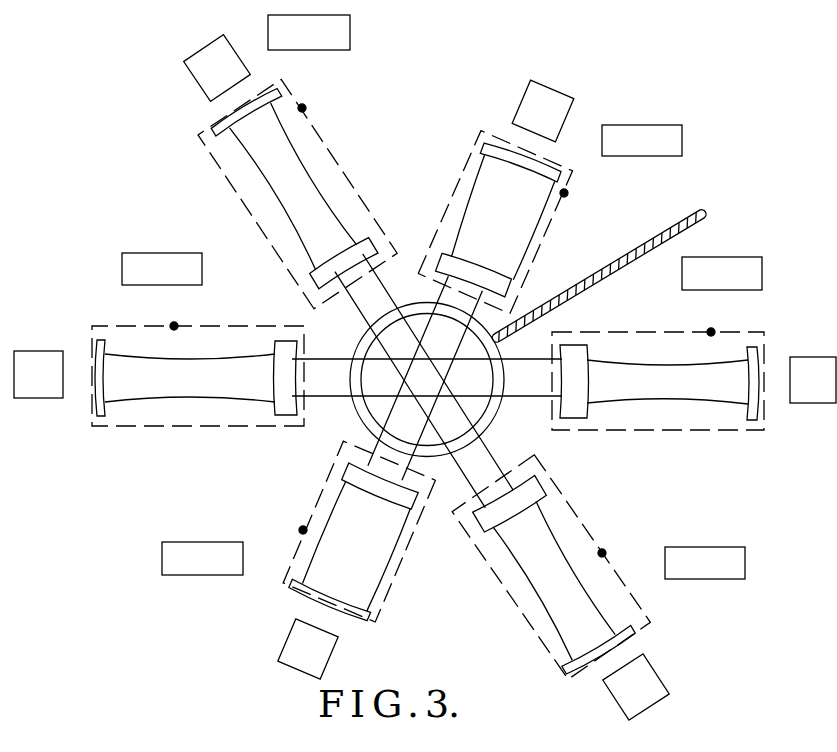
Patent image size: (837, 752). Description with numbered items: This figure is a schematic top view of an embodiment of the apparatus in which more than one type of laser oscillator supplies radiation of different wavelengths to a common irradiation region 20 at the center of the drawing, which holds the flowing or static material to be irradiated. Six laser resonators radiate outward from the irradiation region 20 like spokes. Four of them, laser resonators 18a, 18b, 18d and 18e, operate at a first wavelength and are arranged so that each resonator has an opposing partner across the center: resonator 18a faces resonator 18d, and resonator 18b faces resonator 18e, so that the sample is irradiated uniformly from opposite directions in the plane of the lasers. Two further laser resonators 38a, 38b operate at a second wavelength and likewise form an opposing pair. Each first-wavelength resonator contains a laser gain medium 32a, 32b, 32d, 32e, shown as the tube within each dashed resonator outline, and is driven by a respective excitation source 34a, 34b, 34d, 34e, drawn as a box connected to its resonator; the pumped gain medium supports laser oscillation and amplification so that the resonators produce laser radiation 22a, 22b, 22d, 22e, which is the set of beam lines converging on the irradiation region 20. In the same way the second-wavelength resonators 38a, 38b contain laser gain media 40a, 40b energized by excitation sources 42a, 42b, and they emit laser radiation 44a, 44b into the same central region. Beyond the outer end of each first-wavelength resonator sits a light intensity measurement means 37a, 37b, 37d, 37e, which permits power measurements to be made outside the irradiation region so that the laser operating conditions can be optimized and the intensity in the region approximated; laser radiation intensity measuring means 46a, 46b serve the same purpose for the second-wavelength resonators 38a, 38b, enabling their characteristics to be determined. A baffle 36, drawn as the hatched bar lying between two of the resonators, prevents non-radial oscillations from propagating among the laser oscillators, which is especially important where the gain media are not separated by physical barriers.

The laser resonator 18a is at (520, 618).
The laser resonator 18b is at (700, 432).
The laser resonator 18d is at (344, 171).
The laser resonator 18e is at (180, 426).
The irradiation region 20 is at (388, 405).
The laser radiation 22a is at (482, 457).
The laser radiation 22b is at (530, 348).
The laser radiation 22d is at (363, 312).
The laser radiation 22e is at (330, 390).
The laser gain medium 32a is at (508, 558).
The laser gain medium 32b is at (637, 411).
The laser gain medium 32d is at (310, 153).
The laser gain medium 32e is at (140, 403).
The excitation source 34a is at (602, 553).
The excitation source 34b is at (711, 332).
The excitation source 34d is at (302, 108).
The excitation source 34e is at (174, 326).
The baffle 36 is at (688, 212).
The light intensity measurement means 37a is at (636, 687).
The light intensity measurement means 37b is at (797, 392).
The light intensity measurement means 37d is at (217, 68).
The light intensity measurement means 37e is at (22, 387).
The laser resonator 38a is at (391, 594).
The laser resonator 38b is at (553, 227).
The laser gain medium 40a is at (306, 558).
The laser gain medium 40b is at (478, 182).
The excitation source 42a is at (303, 530).
The excitation source 42b is at (564, 193).
The laser radiation 44a is at (415, 425).
The laser radiation 44b is at (440, 316).
The laser radiation intensity measuring means 46a is at (308, 649).
The laser radiation intensity measuring means 46b is at (543, 111).